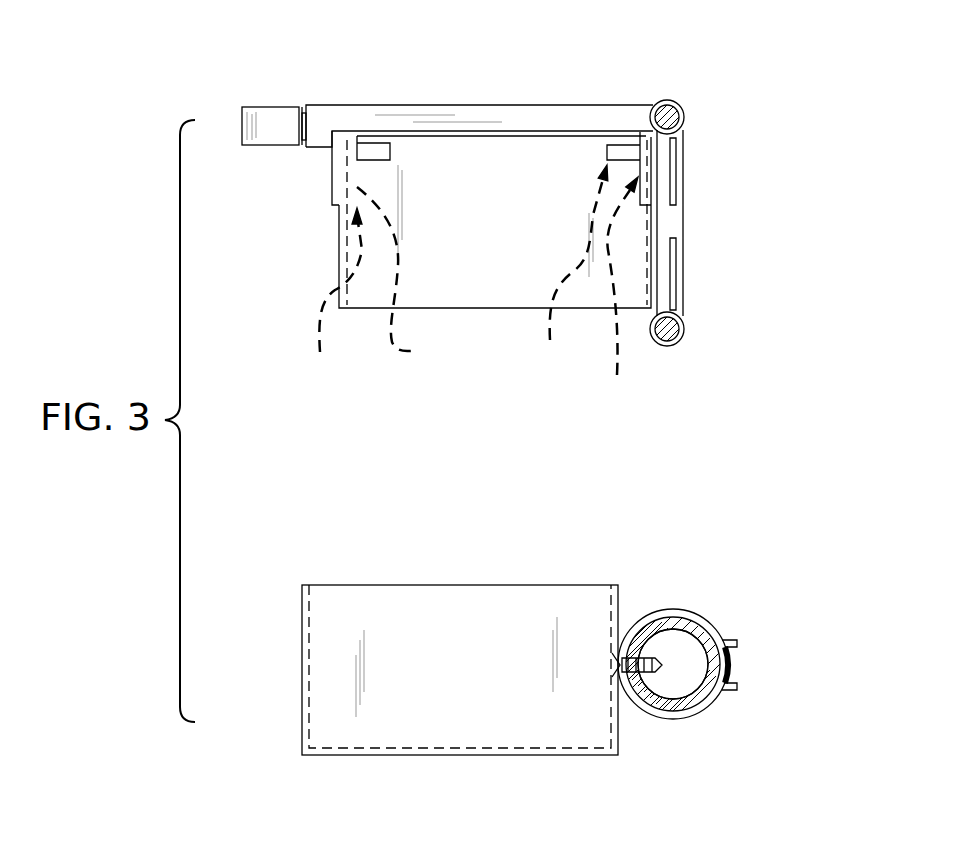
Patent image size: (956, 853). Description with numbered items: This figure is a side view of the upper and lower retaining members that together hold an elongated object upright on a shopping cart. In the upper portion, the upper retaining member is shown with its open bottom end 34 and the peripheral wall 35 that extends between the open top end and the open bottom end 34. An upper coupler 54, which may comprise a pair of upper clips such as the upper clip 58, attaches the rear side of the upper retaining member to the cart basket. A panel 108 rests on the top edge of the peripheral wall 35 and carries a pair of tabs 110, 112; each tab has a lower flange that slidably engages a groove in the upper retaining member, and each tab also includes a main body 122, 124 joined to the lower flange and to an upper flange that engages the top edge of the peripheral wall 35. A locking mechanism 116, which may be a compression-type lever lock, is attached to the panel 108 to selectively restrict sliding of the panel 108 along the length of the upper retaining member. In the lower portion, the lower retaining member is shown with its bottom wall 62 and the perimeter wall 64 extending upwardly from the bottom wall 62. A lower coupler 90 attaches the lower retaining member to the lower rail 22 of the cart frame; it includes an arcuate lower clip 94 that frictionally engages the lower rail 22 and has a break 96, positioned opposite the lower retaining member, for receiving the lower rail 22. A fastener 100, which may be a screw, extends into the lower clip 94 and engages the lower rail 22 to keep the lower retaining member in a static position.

The lower rail 22 is at (676, 702).
The open bottom end 34 is at (374, 326).
The peripheral wall 35 is at (338, 235).
The upper coupler 54 is at (701, 96).
The upper clip 58 is at (664, 101).
The bottom wall 62 is at (360, 757).
The perimeter wall 64 is at (300, 662).
The lower coupler 90 is at (705, 591).
The lower clip 94 is at (662, 650).
The break 96 is at (744, 665).
The fastener 100 is at (650, 673).
The panel 108 is at (487, 112).
The tab 110 is at (562, 271).
The tab 112 is at (325, 298).
The locking mechanism 116 is at (262, 118).
The main body 122 is at (614, 293).
The main body 124 is at (418, 277).